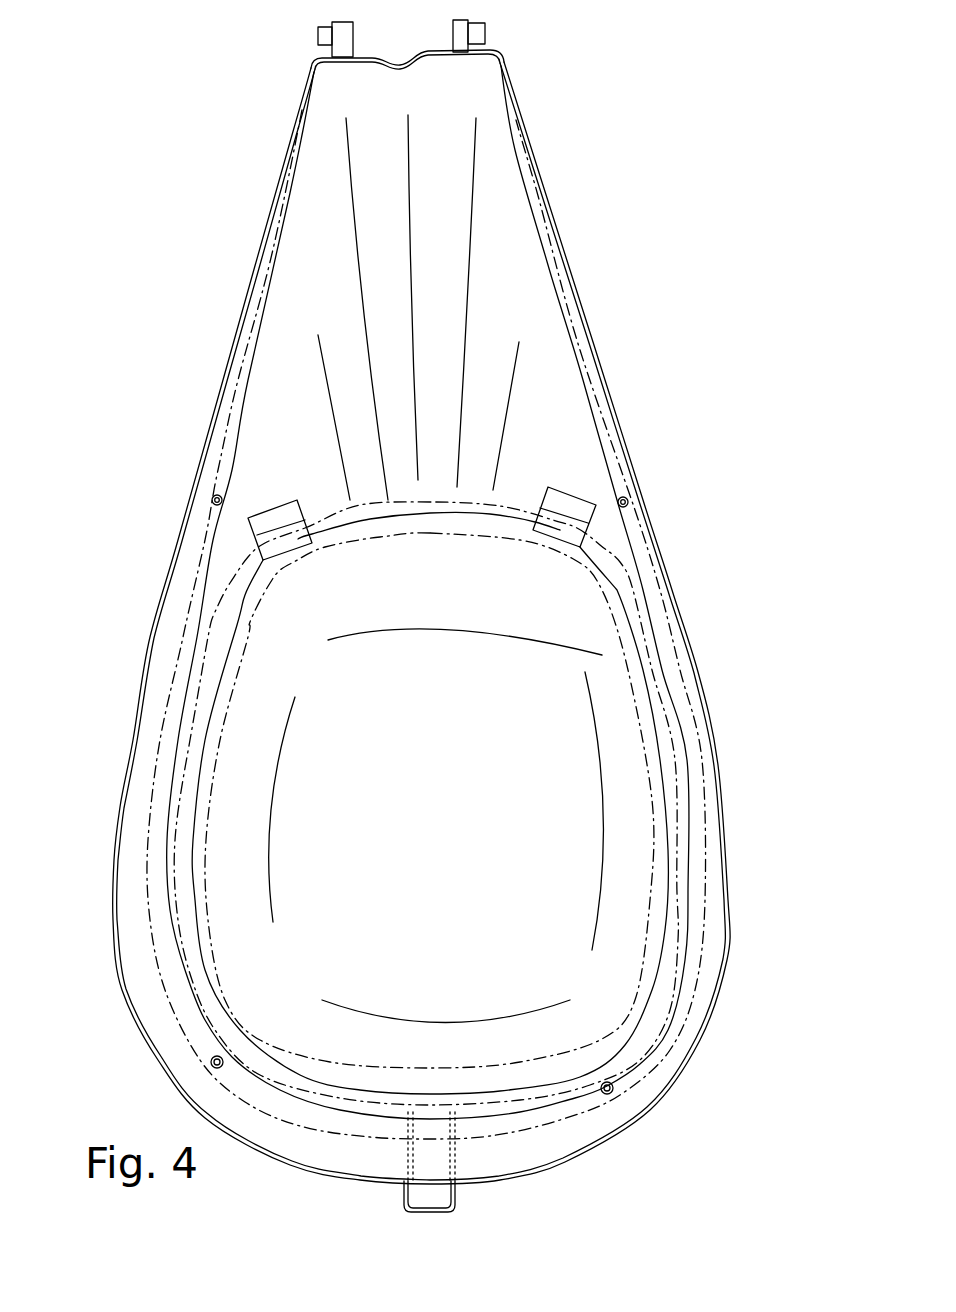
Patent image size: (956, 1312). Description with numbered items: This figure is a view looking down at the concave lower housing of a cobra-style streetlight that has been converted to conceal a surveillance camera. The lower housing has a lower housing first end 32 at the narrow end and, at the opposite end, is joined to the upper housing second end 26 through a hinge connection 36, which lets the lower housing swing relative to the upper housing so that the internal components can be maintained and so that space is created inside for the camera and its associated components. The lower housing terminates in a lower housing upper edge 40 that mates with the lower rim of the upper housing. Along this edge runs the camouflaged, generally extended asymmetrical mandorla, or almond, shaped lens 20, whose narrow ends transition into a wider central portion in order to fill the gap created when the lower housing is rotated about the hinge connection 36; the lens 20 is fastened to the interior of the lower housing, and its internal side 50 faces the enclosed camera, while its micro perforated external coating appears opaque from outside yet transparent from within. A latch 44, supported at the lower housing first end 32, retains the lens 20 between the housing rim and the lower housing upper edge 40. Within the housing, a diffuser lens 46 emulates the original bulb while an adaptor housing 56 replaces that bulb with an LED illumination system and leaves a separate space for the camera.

The mandorla shaped lens 20 is at (648, 508).
The upper housing second end 26 is at (446, 1095).
The lower housing first end 32 is at (331, 284).
The hinge connection 36 is at (318, 34).
The lower housing upper edge 40 is at (667, 575).
The latch 44 is at (460, 1203).
The diffuser lens 46 is at (484, 930).
The internal side 50 is at (705, 922).
The adaptor housing 56 is at (238, 573).